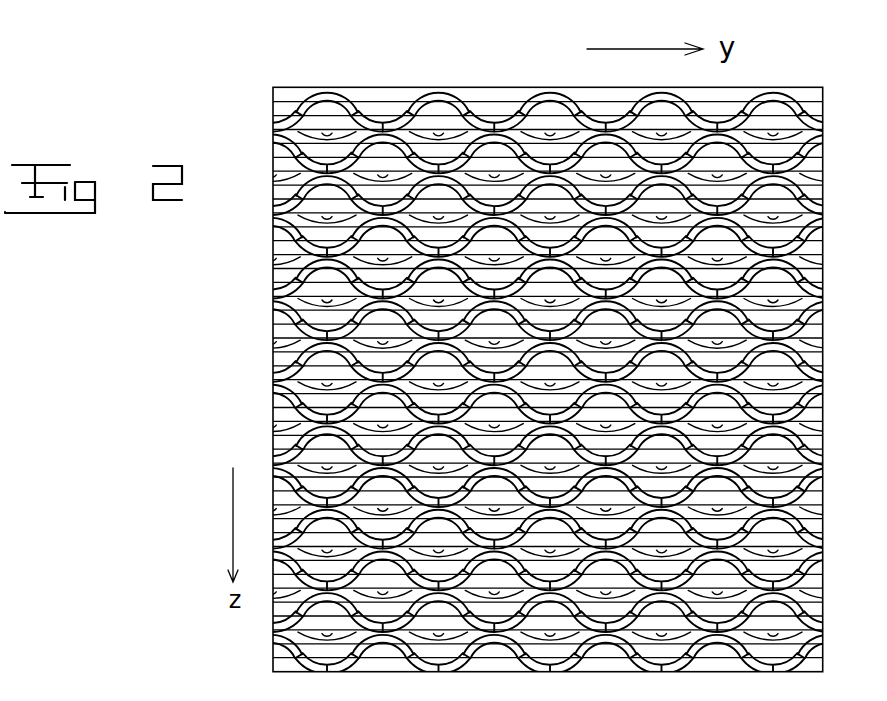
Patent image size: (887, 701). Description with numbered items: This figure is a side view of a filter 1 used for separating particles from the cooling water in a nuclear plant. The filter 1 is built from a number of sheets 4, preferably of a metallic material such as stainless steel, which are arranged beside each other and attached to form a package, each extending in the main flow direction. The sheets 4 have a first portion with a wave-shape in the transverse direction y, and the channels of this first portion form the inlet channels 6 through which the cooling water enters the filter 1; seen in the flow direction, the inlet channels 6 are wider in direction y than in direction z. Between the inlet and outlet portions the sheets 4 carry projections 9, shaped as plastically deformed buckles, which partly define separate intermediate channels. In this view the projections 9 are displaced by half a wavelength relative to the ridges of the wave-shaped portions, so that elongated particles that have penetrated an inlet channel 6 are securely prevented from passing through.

The filter 1 is at (236, 74).
The sheets 4 is at (462, 108).
The inlet channels 6 is at (292, 366).
The projections 9 is at (437, 138).